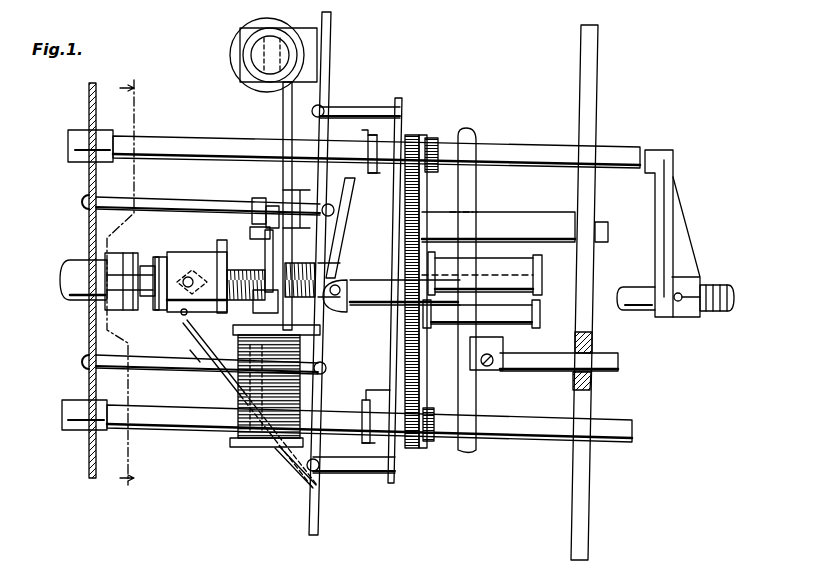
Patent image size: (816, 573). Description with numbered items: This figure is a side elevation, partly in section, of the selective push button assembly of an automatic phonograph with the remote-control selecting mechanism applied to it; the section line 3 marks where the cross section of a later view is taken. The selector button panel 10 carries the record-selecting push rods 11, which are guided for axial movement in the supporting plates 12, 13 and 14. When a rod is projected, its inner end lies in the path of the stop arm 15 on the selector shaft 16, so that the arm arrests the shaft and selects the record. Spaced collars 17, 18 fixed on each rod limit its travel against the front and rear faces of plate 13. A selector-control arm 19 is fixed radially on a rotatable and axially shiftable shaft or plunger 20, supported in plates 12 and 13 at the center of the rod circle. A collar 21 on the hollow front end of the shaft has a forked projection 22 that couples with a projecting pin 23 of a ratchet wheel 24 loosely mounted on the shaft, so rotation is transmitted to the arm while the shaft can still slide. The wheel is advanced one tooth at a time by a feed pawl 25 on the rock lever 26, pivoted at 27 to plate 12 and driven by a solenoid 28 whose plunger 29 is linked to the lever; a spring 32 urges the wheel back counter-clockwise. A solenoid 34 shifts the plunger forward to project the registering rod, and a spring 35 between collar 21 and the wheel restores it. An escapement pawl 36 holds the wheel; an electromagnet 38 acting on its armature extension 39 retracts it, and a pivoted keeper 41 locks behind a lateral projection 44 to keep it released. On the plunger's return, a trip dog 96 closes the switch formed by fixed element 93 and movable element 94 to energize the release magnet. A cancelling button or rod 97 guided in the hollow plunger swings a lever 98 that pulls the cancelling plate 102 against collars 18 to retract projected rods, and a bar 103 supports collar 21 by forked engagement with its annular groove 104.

The section line 3— 3 is at (118, 292).
The selector button panel 10 is at (89, 95).
The record-selecting push rods 11 is at (207, 140).
The supporting plate 12 is at (321, 497).
The supporting plate 13 is at (393, 478).
The supporting plate 14 is at (584, 508).
The stop arm 15 is at (670, 195).
The selector shaft 16 is at (712, 315).
The collar 17 is at (367, 134).
The collar 18 is at (433, 137).
The selector-control arm 19 is at (352, 222).
The shaft or plunger 20 is at (370, 300).
The collar 21 is at (210, 305).
The forked projection 22 is at (217, 243).
The projecting pin 23 is at (246, 276).
The ratchet wheel 24 is at (285, 200).
The feed pawl 25 is at (232, 410).
The rock lever 26 is at (283, 116).
The pivot 27 is at (275, 192).
The solenoid 28 is at (258, 22).
The plunger 29 is at (253, 53).
The spring 32 is at (278, 293).
The solenoid 34 is at (522, 267).
The spring 35 is at (230, 273).
The escapement pawl 36 is at (273, 248).
The electromagnet 38 is at (260, 440).
The extension 39 is at (285, 292).
The pivoted keeper 41 is at (252, 204).
The lateral projection 44 is at (253, 228).
The fixed switch element 93 is at (196, 350).
The movable switch element 94 is at (206, 358).
The trip dog 96 is at (182, 312).
The cancelling button or rod 97 is at (107, 295).
The horizontally-swinging lever 98 is at (115, 258).
The cancelling plate 102 is at (470, 405).
The bar 103 is at (157, 306).
The annular groove 104 is at (166, 258).